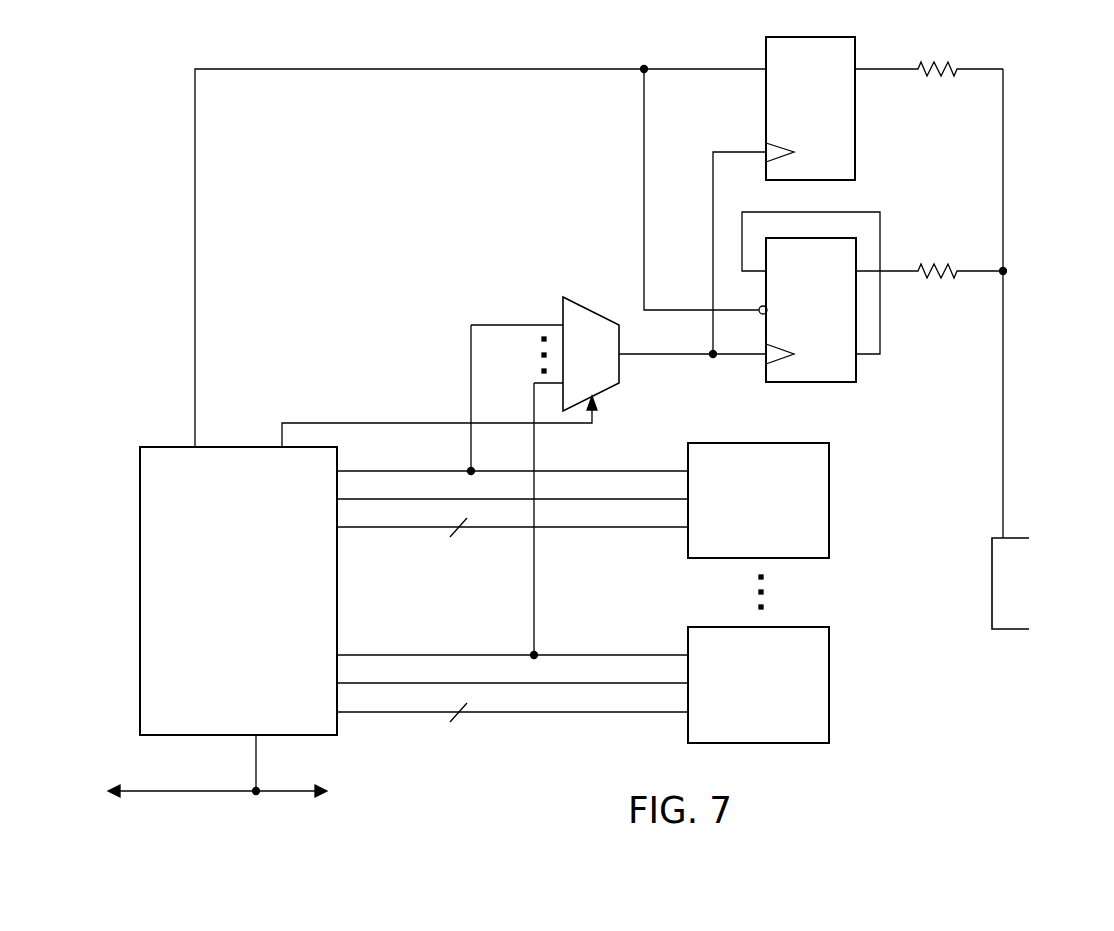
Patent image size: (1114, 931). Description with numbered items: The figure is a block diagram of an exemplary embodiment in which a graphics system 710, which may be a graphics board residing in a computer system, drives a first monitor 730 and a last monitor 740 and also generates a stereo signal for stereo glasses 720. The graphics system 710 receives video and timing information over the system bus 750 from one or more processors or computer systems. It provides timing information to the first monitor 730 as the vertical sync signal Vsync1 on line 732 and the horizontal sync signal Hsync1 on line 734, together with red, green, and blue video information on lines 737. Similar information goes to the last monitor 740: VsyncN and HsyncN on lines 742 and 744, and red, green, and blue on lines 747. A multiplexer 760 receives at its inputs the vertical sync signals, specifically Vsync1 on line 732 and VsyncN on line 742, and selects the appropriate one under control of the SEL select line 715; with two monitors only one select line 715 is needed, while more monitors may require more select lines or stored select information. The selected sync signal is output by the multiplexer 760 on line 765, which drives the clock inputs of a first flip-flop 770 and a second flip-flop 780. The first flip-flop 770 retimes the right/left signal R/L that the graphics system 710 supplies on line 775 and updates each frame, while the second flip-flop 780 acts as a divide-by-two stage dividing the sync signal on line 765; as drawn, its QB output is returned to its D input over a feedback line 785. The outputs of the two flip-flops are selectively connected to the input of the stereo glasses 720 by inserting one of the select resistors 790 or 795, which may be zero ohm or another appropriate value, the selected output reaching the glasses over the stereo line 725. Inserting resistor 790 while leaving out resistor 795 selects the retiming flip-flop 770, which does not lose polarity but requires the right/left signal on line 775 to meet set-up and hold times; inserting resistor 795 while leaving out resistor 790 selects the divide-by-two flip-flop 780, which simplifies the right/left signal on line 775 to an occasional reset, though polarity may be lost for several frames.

The graphics system 710 is at (139, 582).
The select line 715 is at (342, 423).
The stereo glasses 720 is at (1012, 630).
The stereo signal line 725 is at (1004, 375).
The first monitor 730 is at (830, 501).
The line 732 is at (598, 470).
The line 734 is at (598, 498).
The lines 737 is at (598, 526).
The last monitor 740 is at (830, 684).
The line 742 is at (598, 654).
The line 744 is at (598, 682).
The lines 747 is at (598, 711).
The system bus 750 is at (155, 790).
The multiplexer 760 is at (583, 304).
The line 765 is at (665, 356).
The first flip-flop 770 is at (809, 36).
The line 775 is at (196, 280).
The second flip-flop 780 is at (828, 383).
The feedback line 785 is at (881, 328).
The select resistor 790 is at (933, 62).
The select resistor 795 is at (933, 264).